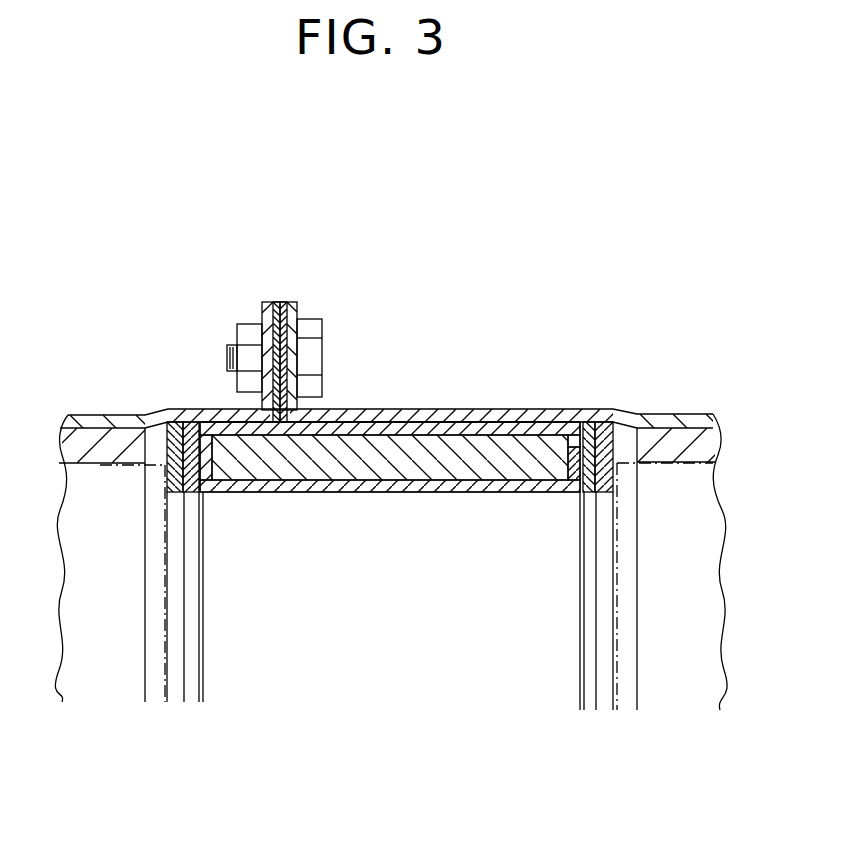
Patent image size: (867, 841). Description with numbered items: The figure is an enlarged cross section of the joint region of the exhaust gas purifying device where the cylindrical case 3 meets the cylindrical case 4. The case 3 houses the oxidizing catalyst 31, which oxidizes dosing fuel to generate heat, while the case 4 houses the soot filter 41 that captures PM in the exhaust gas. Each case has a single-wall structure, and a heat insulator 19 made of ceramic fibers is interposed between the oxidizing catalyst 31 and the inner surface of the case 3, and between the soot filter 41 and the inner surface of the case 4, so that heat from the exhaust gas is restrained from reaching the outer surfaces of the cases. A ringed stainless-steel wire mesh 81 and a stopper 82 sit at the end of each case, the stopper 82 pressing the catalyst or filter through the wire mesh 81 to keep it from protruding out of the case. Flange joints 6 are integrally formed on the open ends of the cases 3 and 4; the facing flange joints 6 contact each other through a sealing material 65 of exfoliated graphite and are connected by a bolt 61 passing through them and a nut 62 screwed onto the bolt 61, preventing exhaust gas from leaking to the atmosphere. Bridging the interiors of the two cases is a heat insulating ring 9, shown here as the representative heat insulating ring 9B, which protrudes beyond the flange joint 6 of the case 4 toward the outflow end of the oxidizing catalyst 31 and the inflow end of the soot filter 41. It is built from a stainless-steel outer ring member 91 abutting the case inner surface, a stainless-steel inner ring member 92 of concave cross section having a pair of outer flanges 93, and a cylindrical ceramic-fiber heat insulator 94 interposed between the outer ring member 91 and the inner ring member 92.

The cylindrical case 3 is at (94, 414).
The cylindrical case 4 is at (496, 409).
The flange joint 6 is at (281, 331).
The bolt 61 is at (322, 332).
The nut 62 is at (237, 330).
The sealing material 65 is at (281, 302).
The wire mesh 81 is at (175, 422).
The stopper 82 is at (190, 422).
The heat insulating ring 9 is at (390, 441).
The heat insulating ring 9B is at (390, 439).
The outer ring member 91 is at (445, 422).
The inner ring member 92 is at (468, 493).
The outer flange 93 is at (562, 452).
The heat insulator 94 is at (401, 435).
The heat insulator 19 is at (113, 455).
The oxidizing catalyst 31 is at (165, 682).
The soot filter 41 is at (617, 667).